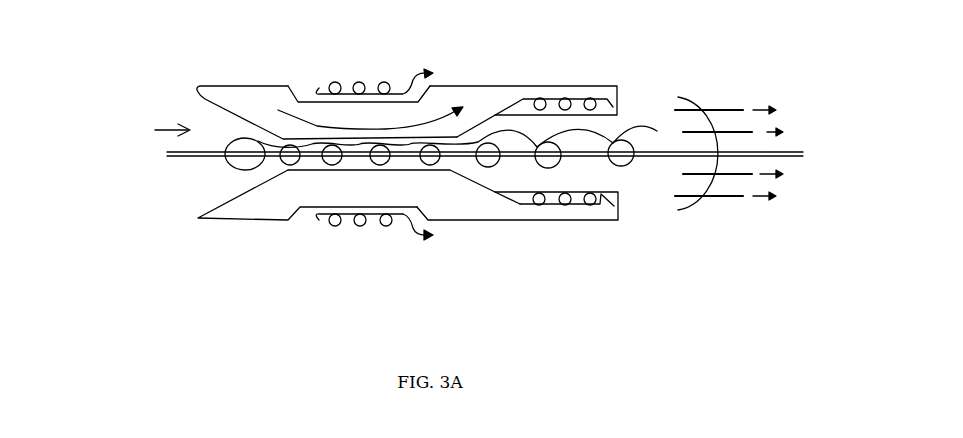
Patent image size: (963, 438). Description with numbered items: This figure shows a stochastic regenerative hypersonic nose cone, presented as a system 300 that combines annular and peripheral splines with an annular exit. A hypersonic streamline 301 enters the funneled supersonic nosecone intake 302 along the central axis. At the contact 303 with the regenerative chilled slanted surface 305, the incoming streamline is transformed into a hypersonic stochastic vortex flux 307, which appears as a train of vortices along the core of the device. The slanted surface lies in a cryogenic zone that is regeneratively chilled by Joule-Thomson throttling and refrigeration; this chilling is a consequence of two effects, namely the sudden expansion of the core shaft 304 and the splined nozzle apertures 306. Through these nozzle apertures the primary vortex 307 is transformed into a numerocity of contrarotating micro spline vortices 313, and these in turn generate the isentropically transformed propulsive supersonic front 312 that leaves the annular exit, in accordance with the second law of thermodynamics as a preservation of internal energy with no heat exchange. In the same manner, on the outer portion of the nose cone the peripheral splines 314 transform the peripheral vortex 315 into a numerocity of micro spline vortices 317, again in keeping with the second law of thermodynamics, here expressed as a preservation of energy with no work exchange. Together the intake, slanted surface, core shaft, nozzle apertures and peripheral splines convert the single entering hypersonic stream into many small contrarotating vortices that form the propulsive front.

The system 300 is at (165, 209).
The hypersonic streamline 301 is at (157, 132).
The funneled supersonic nosecone intake 302 is at (200, 218).
The contact 303 is at (228, 118).
The core shaft 304 is at (472, 187).
The regenerative chilled slanted surface 305 is at (312, 116).
The nozzle apertures 306 is at (552, 208).
The hypersonic stochastic vortex flux 307 is at (643, 125).
The transformed supersonic front 312 is at (740, 138).
The spline vortices 313 is at (618, 218).
The peripheral splines 314 is at (317, 215).
The peripheral vortex 315 is at (363, 222).
The peripheral spline vortices 317 is at (428, 238).